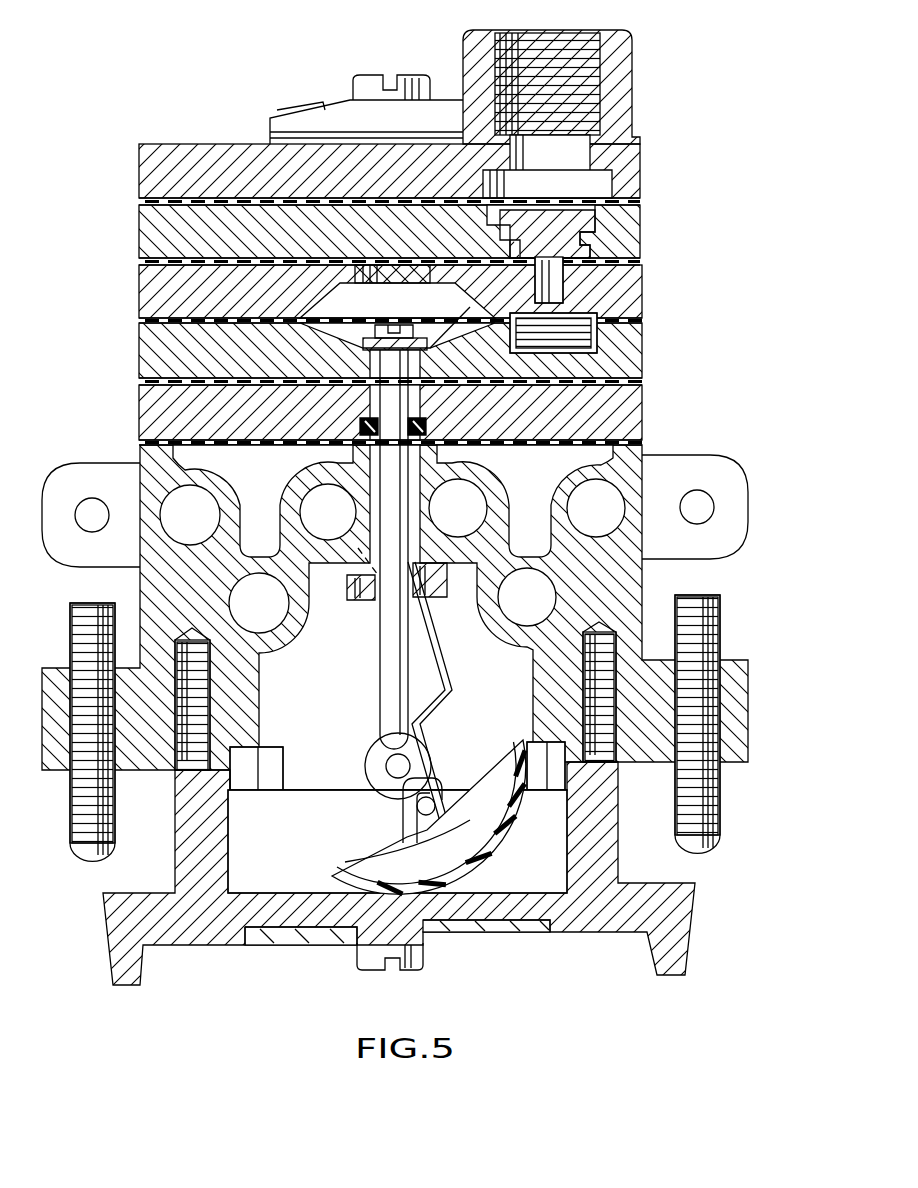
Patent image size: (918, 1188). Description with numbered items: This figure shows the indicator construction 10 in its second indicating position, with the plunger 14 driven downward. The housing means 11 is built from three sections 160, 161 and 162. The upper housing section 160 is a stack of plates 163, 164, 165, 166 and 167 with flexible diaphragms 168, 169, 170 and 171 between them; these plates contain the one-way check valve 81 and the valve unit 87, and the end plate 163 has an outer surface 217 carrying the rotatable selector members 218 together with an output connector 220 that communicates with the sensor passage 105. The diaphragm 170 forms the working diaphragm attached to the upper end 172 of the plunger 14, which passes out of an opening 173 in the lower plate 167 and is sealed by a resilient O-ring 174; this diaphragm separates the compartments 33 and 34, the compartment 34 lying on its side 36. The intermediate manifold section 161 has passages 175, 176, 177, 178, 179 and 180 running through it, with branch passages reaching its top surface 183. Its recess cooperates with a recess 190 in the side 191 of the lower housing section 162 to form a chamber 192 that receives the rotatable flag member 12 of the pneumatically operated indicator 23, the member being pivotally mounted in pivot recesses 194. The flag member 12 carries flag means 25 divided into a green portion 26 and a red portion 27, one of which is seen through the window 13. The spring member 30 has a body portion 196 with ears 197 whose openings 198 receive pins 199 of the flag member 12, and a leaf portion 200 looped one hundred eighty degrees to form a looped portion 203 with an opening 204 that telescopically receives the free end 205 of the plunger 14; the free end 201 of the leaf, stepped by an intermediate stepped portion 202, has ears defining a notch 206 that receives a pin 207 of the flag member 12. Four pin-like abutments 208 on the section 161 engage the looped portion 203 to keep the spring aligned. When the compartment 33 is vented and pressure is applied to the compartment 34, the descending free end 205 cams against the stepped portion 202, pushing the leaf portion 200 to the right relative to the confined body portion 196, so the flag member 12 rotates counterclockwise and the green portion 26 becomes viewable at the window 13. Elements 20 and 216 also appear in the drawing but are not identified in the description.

The indicator construction 10 is at (720, 76).
The housing means 11 is at (139, 168).
The rotatable flag member 12 is at (482, 856).
The window 13 is at (365, 948).
The plunger 14 is at (378, 460).
The body portion 20 is at (470, 562).
The pneumatically operated indicator 23 is at (330, 803).
The flag means 25 is at (462, 880).
The green portion 26 is at (430, 882).
The red portion 27 is at (560, 826).
The spring member 30 is at (428, 637).
The compartment 33 is at (440, 350).
The compartment 34 is at (345, 307).
The side of flexible diaphragm 36 is at (445, 325).
The one-way check valve 81 is at (606, 333).
The valve unit 87 is at (592, 232).
The sensor passage 105 is at (620, 136).
The housing section 160 is at (690, 262).
The intermediate housing section 161 is at (730, 566).
The housing section 162 is at (727, 860).
The end plate 163 is at (632, 168).
The plate 164 is at (630, 236).
The plate 165 is at (620, 292).
The plate 166 is at (630, 349).
The lower plate 167 is at (625, 394).
The flexible diaphragm 168 is at (150, 222).
The flexible diaphragm 169 is at (150, 276).
The diaphragm 170 is at (150, 332).
The flexible diaphragm 171 is at (150, 393).
The upper end of plunger 172 is at (372, 372).
The opening 173 is at (415, 396).
The O-ring 174 is at (360, 426).
The manifold passage 175 is at (395, 606).
The manifold passage 176 is at (152, 587).
The manifold passage 177 is at (292, 490).
The manifold passage 178 is at (475, 480).
The manifold passage 179 is at (570, 592).
The manifold passage 180 is at (625, 456).
The top surface 183 is at (620, 432).
The recess 190 is at (565, 862).
The side of housing section 191 is at (606, 762).
The chamber 192 is at (505, 666).
The pivot recesses 194 is at (235, 775).
The body portion 196 is at (382, 668).
The ears 197 is at (430, 692).
The openings 198 is at (386, 769).
The pins 199 is at (400, 762).
The leaf portion 200 is at (440, 662).
The free end 201 is at (500, 820).
The stepped portion 202 is at (430, 718).
The looped portion 203 is at (356, 530).
The opening 204 is at (372, 565).
The free end of plunger 205 is at (395, 735).
The notch 206 is at (470, 872).
The pin 207 is at (428, 795).
The pin-like abutments 208 is at (370, 603).
The cap 216 is at (366, 83).
The outer surface 217 is at (200, 143).
The rotatable selector members 218 is at (440, 88).
The output connector 220 is at (632, 50).